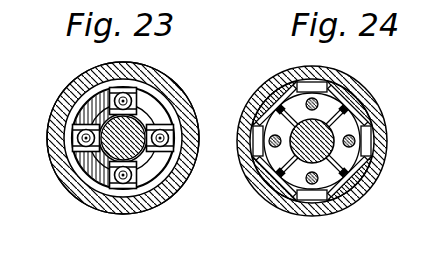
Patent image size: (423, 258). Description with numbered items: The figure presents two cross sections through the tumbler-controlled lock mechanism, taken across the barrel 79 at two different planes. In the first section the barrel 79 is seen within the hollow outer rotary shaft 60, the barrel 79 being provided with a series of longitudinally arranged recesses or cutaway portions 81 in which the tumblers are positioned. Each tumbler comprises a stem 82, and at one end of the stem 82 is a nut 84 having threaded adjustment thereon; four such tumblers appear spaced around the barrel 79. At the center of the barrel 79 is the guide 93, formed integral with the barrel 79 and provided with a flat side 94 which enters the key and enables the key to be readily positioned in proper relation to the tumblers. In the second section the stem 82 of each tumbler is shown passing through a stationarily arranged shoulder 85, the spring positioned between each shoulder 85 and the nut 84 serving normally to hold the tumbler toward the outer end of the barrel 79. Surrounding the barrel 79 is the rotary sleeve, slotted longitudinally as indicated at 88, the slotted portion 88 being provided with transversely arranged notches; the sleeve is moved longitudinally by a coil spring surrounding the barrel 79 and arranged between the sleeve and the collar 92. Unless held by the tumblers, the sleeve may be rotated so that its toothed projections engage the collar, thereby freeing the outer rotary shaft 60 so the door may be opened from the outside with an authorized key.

In FIG. 23, the outer rotary shaft 60 is at (59, 160).
In FIG. 24, the outer rotary shaft 60 is at (285, 200).
In FIG. 23, the barrel 79 is at (97, 166).
In FIG. 23, the recesses 81 is at (78, 108).
In FIG. 23, the stem 82 is at (165, 139).
In FIG. 24, the stem 82 is at (311, 185).
In FIG. 23, the nut 84 is at (173, 125).
In FIG. 24, the shoulder 85 is at (326, 113).
In FIG. 24, the slotted portion 88 is at (306, 84).
In FIG. 23, the collar 92 is at (152, 191).
In FIG. 23, the guide 93 is at (146, 153).
In FIG. 24, the guide 93 is at (341, 184).
In FIG. 23, the flat side 94 is at (140, 120).